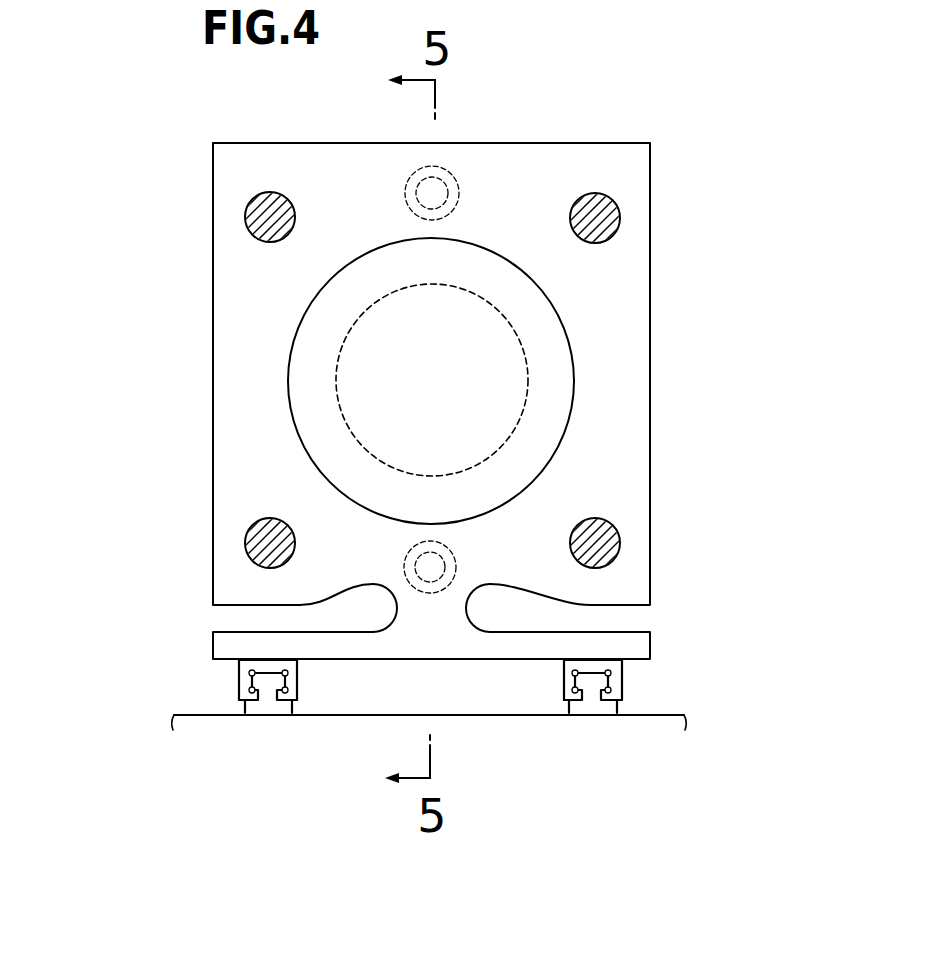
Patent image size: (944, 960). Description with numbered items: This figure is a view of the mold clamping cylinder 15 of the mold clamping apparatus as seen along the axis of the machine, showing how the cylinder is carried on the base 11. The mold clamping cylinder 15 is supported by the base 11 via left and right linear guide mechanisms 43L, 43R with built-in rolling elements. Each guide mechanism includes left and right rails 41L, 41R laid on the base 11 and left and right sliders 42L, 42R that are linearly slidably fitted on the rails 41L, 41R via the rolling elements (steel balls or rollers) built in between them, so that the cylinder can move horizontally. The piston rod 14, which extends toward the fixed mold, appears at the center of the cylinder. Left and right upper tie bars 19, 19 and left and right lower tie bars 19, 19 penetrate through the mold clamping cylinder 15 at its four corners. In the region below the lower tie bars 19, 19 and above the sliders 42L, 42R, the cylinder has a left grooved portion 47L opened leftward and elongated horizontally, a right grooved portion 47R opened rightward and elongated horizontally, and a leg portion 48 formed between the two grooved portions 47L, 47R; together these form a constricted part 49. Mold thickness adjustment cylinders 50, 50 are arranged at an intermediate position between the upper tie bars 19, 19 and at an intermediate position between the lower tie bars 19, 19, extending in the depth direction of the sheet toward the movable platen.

The base 11 is at (447, 715).
The piston rod 14 is at (528, 381).
The mold clamping cylinder 15 is at (499, 168).
The tie bars 19 is at (257, 213).
The left rail 41L is at (240, 711).
The right rail 41R is at (622, 711).
The left slider 42L is at (242, 682).
The right slider 42R is at (622, 682).
The left linear guide mechanism 43L is at (149, 660).
The right linear guide mechanism 43R is at (713, 660).
The left grooved portion 47L is at (360, 592).
The right grooved portion 47R is at (500, 602).
The leg portion 48 is at (430, 640).
The constricted part 49 is at (476, 670).
The mold thickness adjustment cylinders 50 is at (430, 193).